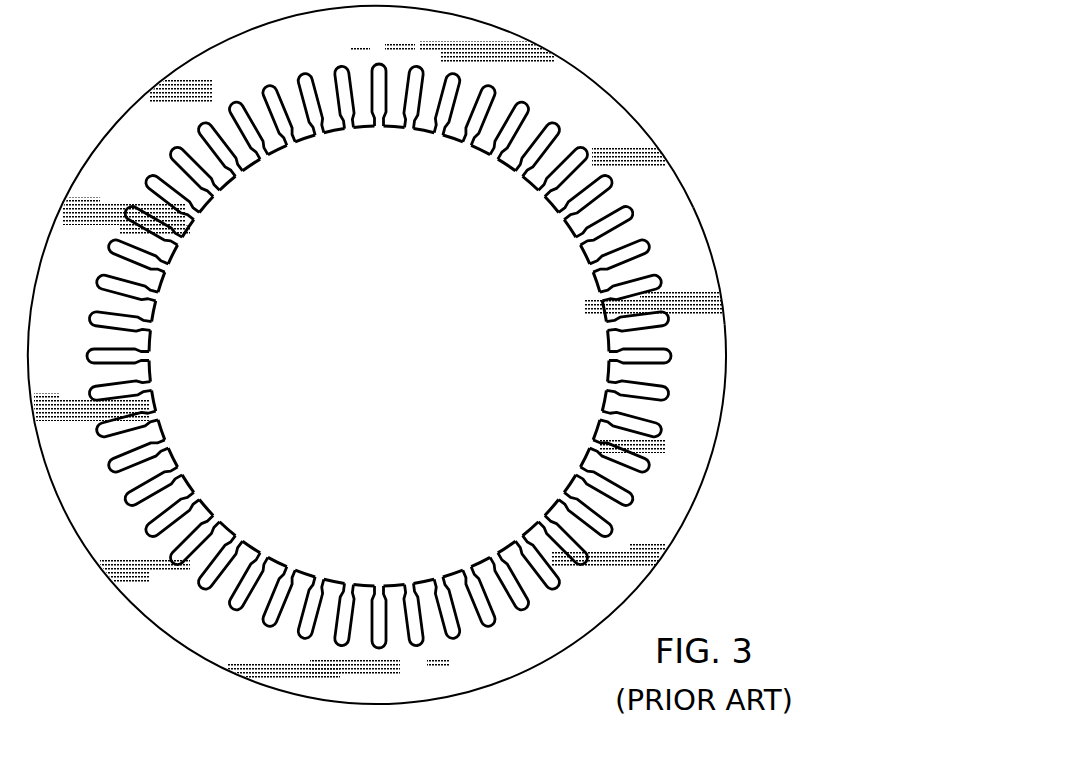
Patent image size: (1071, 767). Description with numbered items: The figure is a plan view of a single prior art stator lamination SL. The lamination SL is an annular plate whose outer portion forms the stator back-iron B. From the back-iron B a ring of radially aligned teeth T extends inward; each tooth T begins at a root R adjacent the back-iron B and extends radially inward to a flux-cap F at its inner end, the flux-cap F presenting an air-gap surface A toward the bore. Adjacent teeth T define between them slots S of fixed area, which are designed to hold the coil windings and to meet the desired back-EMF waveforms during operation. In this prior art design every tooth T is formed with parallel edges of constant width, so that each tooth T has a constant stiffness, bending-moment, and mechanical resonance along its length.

The stator lamination SL is at (616, 90).
The slot S is at (612, 181).
The air-gap surface A is at (560, 211).
The stator back-iron B is at (717, 260).
The root R is at (662, 412).
The flux-cap F is at (608, 318).
The tooth T is at (587, 542).